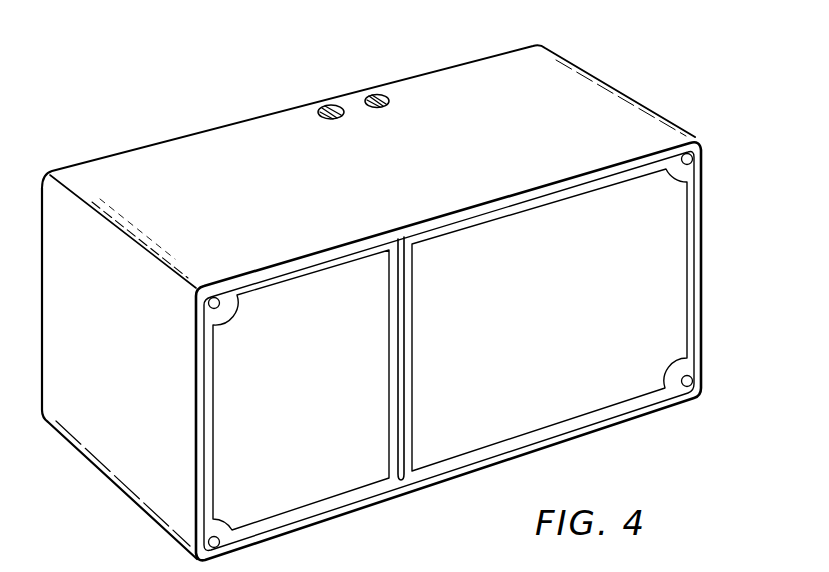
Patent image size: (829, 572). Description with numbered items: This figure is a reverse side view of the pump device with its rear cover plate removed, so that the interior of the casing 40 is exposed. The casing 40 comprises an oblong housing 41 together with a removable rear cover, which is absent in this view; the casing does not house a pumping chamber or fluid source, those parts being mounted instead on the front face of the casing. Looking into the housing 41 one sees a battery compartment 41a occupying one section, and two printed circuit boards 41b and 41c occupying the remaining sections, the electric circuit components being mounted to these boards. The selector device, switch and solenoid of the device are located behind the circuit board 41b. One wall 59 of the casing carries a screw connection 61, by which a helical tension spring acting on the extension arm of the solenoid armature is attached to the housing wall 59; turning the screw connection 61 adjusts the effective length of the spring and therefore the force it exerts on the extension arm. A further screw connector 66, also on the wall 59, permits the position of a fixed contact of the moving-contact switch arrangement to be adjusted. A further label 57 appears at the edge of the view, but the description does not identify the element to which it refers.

The casing 40 is at (64, 8).
The connector 57 is at (234, 6).
The wall of the casing 59 is at (481, 73).
The screw connection 61 is at (329, 100).
The screw connector 66 is at (379, 93).
The oblong housing 41 is at (617, 80).
The battery compartment 41a is at (305, 502).
The printed circuit board 41b is at (403, 456).
The printed circuit board 41c is at (672, 247).